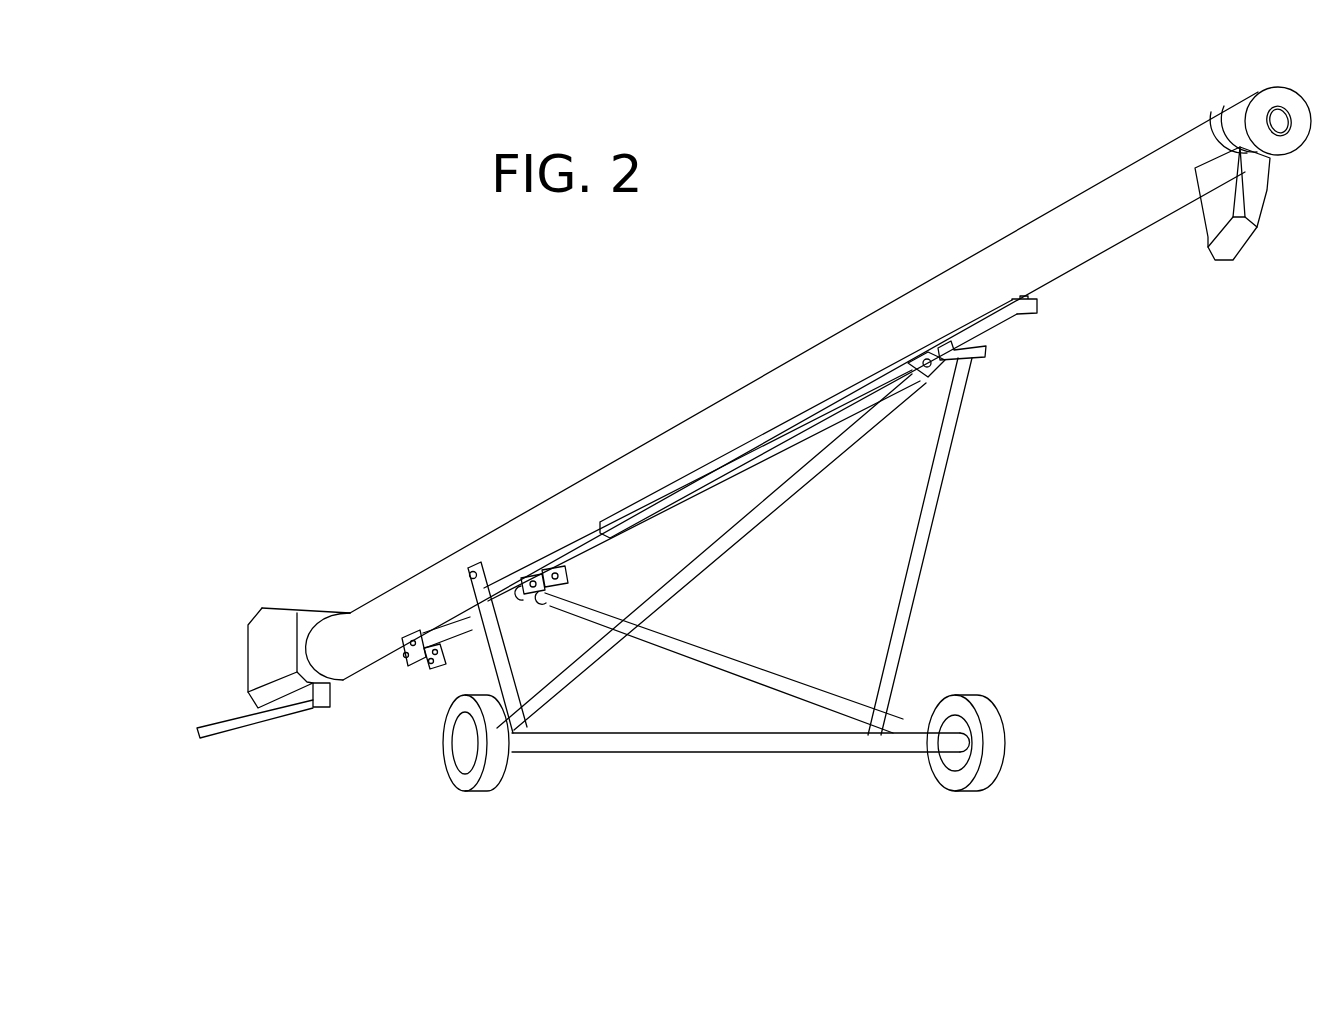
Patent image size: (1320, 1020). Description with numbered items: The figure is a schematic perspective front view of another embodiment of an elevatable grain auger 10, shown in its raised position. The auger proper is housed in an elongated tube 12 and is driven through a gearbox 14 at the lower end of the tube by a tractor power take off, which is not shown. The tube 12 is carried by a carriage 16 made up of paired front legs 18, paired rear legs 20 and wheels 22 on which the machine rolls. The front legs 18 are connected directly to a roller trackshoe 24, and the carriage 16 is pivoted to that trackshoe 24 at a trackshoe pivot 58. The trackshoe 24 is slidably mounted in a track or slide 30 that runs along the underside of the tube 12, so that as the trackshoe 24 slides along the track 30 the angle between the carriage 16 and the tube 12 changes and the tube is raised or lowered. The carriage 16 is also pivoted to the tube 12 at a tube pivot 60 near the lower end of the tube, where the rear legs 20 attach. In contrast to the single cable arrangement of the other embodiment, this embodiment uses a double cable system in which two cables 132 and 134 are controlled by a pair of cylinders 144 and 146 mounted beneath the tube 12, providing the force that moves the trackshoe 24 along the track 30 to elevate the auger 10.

The elevatable grain auger 10 is at (664, 380).
The elongated tube 12 is at (596, 478).
The gearbox 14 is at (277, 627).
The carriage 16 is at (948, 538).
The front legs 18 is at (765, 510).
The rear legs 20 is at (496, 662).
The wheels 22 is at (990, 722).
The roller trackshoe 24 is at (967, 357).
The track 30 is at (1022, 323).
The trackshoe pivot 58 is at (921, 385).
The tube pivot 60 is at (470, 566).
The cable 132 is at (545, 545).
The cable 134 is at (643, 549).
The cylinder 144 is at (405, 658).
The cylinder 146 is at (432, 672).